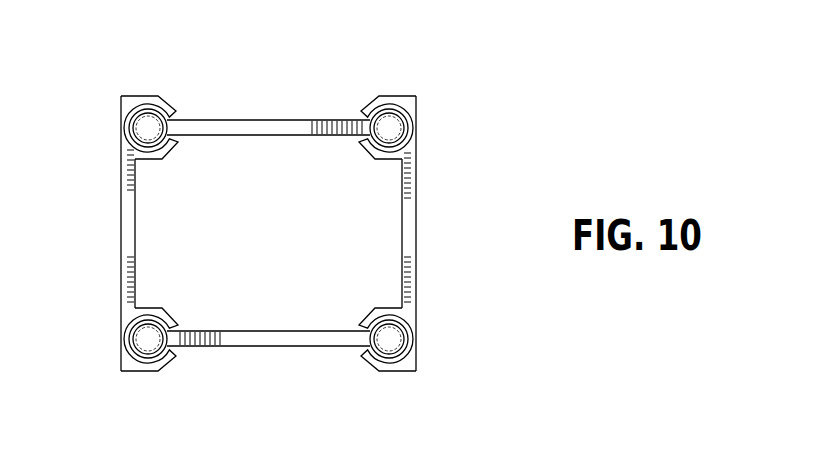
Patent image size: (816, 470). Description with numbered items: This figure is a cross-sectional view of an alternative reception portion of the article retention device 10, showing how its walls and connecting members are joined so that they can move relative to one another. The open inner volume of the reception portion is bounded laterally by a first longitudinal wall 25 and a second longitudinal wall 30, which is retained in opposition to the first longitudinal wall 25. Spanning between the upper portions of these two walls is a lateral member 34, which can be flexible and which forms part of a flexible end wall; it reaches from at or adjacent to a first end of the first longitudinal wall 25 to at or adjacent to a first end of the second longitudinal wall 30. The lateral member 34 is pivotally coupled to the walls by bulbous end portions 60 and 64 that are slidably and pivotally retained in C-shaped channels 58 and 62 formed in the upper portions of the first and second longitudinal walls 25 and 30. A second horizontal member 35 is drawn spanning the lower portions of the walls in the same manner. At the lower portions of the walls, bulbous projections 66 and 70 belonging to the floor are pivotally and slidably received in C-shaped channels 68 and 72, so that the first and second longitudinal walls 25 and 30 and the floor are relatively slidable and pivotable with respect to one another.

The article retention device 10 is at (495, 120).
The first longitudinal wall 25 is at (417, 222).
The second longitudinal wall 30 is at (121, 230).
The lateral member 34 is at (258, 119).
The lower cross bar 35 is at (265, 346).
The C-shaped channel 58 is at (420, 130).
The bulbous end portion 60 is at (365, 105).
The C-shaped channel 62 is at (124, 127).
The bulbous end portion 64 is at (166, 100).
The bulbous projection 66 is at (408, 333).
The C-shaped channel 68 is at (365, 355).
The bulbous projection 70 is at (124, 343).
The C-shaped channel 72 is at (128, 321).